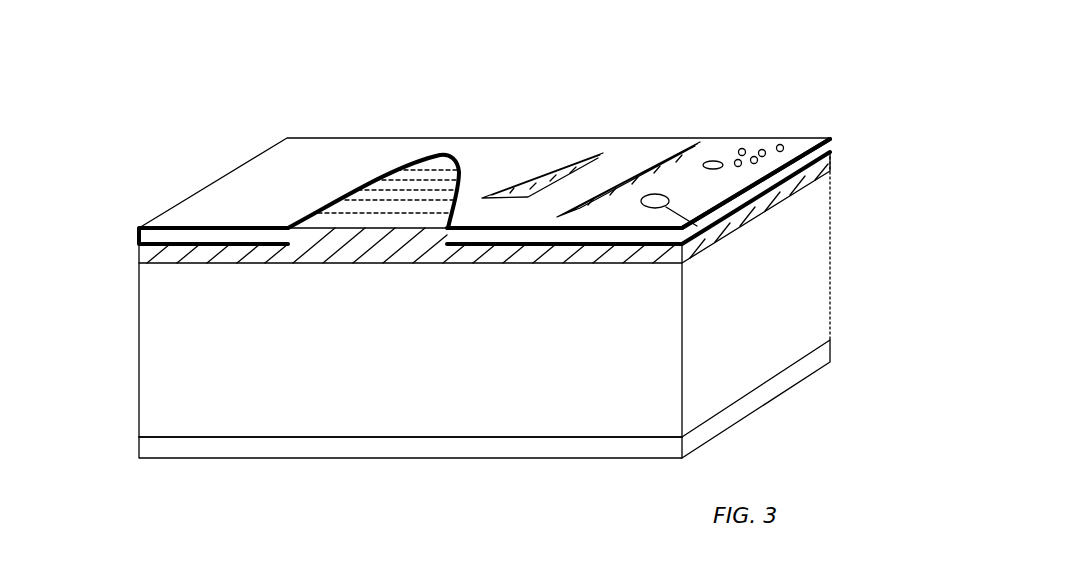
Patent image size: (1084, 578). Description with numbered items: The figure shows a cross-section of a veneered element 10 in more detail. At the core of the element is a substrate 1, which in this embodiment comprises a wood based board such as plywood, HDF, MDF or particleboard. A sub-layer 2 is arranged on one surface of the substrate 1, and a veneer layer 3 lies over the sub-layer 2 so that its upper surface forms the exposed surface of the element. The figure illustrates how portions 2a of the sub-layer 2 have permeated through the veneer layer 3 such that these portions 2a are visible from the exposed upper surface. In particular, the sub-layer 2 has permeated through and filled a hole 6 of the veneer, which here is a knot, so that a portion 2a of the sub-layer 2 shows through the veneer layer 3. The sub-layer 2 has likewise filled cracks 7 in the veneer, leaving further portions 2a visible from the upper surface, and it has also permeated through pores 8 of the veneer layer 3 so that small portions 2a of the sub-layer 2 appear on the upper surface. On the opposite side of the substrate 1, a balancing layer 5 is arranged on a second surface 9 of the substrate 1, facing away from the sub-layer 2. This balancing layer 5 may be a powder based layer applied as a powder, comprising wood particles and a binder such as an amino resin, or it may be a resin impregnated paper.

The veneered element 10 is at (205, 151).
The substrate 1 is at (822, 310).
The sub-layer 2 is at (832, 153).
The portions of the sub-layer 2a is at (397, 178).
The veneer layer 3 is at (832, 140).
The balancing layer 5 is at (820, 360).
The hole 6 is at (443, 156).
The cracks 7 is at (556, 176).
The pores 8 is at (752, 157).
The second surface 9 is at (348, 437).